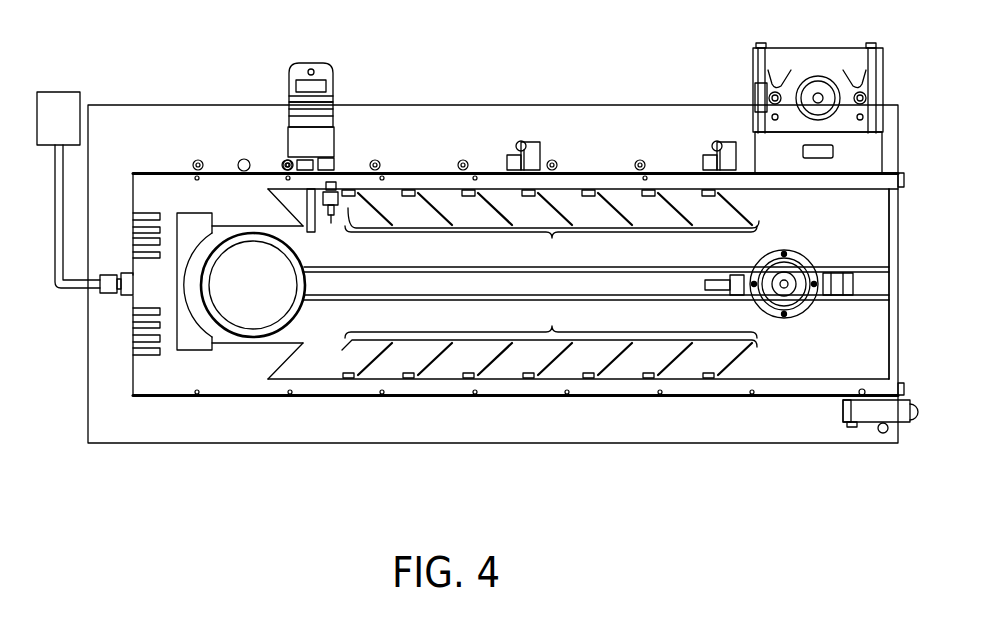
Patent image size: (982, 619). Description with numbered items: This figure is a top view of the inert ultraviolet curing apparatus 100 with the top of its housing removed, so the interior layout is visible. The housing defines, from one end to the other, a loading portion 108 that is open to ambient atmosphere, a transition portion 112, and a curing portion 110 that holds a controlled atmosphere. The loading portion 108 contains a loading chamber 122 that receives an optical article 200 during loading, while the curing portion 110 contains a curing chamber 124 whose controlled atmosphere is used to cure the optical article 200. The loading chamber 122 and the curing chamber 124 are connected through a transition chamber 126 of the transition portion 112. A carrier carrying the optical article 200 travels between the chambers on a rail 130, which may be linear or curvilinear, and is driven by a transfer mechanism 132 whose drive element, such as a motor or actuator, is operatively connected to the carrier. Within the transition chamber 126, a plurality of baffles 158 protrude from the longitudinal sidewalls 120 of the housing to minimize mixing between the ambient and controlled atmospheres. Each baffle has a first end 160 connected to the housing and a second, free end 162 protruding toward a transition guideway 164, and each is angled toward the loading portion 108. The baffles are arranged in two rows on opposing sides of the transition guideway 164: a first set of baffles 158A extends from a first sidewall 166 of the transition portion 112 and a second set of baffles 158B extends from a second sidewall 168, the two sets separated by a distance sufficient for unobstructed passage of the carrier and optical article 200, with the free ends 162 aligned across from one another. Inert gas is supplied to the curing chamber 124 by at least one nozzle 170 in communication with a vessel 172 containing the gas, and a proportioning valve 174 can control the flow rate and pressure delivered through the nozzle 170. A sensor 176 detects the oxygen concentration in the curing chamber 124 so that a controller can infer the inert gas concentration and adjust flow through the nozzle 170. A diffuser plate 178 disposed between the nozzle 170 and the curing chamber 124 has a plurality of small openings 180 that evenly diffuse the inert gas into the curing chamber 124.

The curing apparatus 100 is at (678, 55).
The loading portion 108 is at (835, 360).
The curing portion 110 is at (197, 318).
The transition portion 112 is at (636, 362).
The longitudinal portions or sidewalls 120 is at (588, 182).
The loading chamber 122 is at (874, 342).
The curing chamber 124 is at (277, 284).
The transition chamber 126 is at (667, 330).
The rail 130 is at (462, 303).
The transfer mechanism 132 is at (783, 250).
The plurality of baffles 158 is at (347, 203).
The first set of baffles 158A is at (551, 247).
The second set of baffles 158B is at (551, 320).
The first end 160 is at (410, 190).
The second, free end 162 is at (448, 190).
The transition guideway 164 is at (637, 250).
The first sidewall 166 is at (357, 187).
The second sidewall 168 is at (375, 385).
The nozzle 170 is at (107, 294).
The vessel 172 is at (63, 110).
The proportioning valve 174 is at (126, 273).
The sensor 176 is at (300, 140).
The diffuser plate 178 is at (176, 307).
The openings 180 is at (175, 284).
The optical article 200 is at (252, 283).